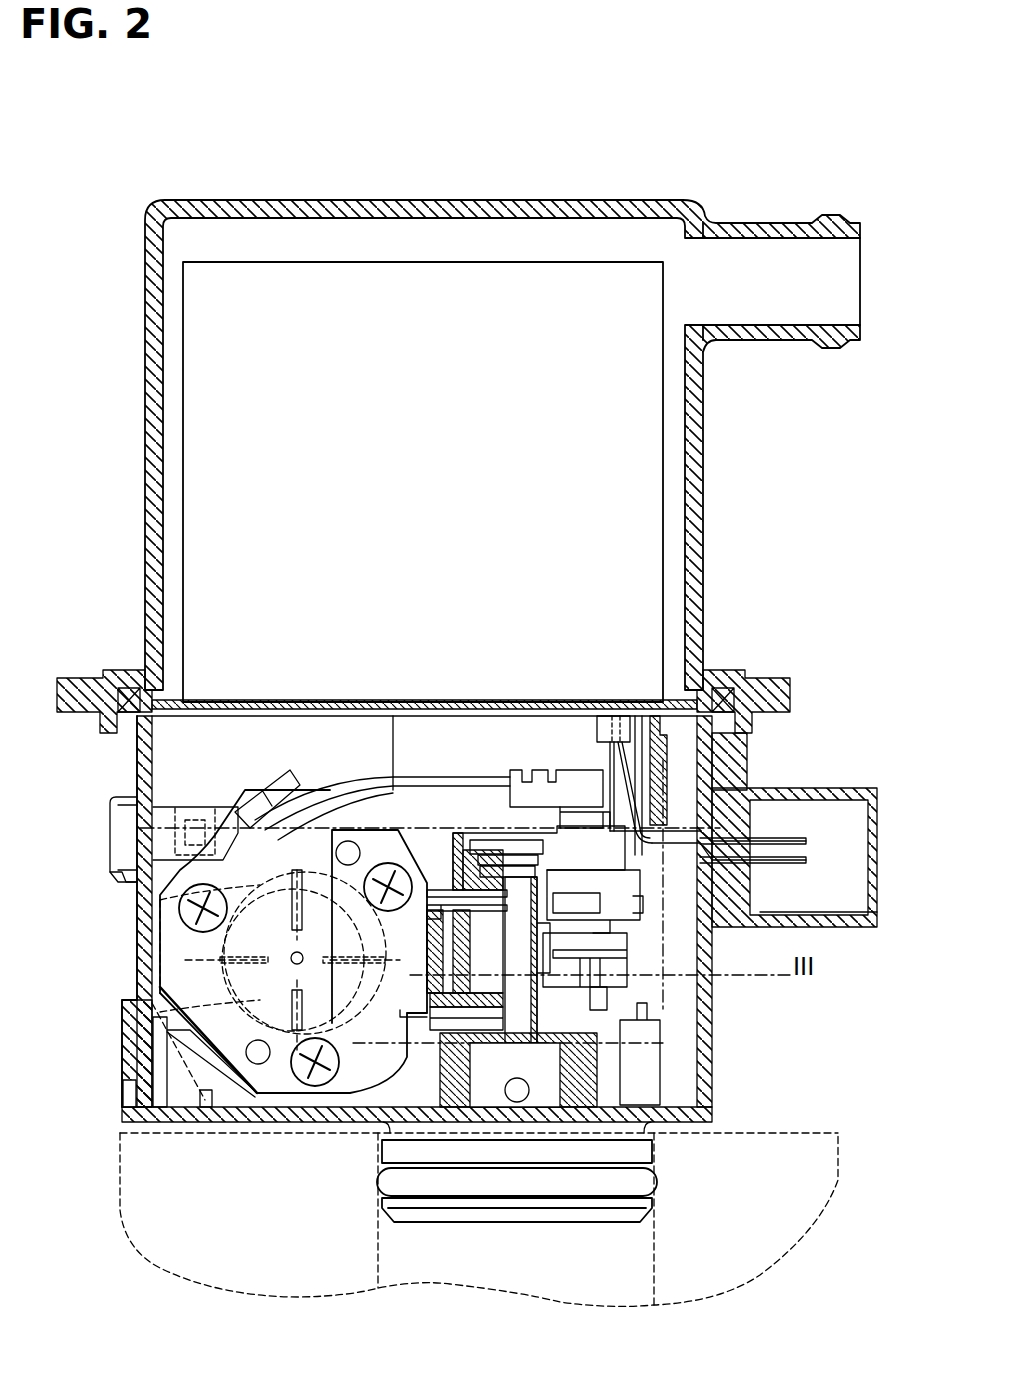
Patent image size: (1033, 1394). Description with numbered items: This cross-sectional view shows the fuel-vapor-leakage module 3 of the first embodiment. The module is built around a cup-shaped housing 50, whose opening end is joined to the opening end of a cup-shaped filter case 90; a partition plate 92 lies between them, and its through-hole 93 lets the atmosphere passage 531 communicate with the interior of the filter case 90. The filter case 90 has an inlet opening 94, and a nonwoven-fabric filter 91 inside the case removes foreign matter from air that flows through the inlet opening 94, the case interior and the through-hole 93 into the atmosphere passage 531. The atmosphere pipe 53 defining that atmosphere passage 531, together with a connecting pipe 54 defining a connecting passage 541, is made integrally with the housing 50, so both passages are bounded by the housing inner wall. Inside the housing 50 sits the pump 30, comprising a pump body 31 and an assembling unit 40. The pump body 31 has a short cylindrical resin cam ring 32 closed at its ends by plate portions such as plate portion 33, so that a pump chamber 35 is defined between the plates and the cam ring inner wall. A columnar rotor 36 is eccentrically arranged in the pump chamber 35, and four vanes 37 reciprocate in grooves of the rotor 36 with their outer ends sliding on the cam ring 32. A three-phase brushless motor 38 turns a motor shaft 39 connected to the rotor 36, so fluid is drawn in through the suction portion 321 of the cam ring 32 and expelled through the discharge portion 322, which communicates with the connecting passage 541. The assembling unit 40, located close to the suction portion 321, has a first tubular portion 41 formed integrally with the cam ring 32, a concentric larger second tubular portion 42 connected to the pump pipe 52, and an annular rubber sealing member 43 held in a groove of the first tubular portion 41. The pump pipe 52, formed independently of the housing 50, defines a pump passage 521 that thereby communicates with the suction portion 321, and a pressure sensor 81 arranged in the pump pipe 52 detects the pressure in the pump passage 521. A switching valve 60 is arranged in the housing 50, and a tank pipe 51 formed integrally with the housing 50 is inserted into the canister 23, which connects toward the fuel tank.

The fuel-vapor-leakage module 3 is at (728, 125).
The filter case 90 is at (430, 200).
The filter 91 is at (500, 270).
The inlet opening 94 is at (700, 300).
The through-hole 93 is at (228, 700).
The partition plate 92 is at (368, 700).
The atmosphere pipe 53 is at (135, 748).
The atmosphere passage 531 is at (165, 778).
The switching valve 60 is at (390, 735).
The motor 38 is at (207, 860).
The vane 37 is at (290, 830).
The assembling unit 40 is at (445, 868).
The pressure sensor 81 is at (520, 805).
The first tubular portion 41 is at (440, 893).
The sealing member 43 is at (478, 854).
The second tubular portion 42 is at (492, 866).
The connecting pipe 54 is at (135, 845).
The connecting passage 541 is at (135, 872).
The pump chamber 35 is at (160, 900).
The discharge portion 322 is at (158, 932).
The motor shaft 39 is at (290, 965).
The rotor 36 is at (160, 1012).
The suction portion 321 is at (372, 1088).
The pump pipe 52 is at (545, 1000).
The pump passage 521 is at (540, 1024).
The housing 50 is at (712, 1050).
The canister 23 is at (800, 1140).
The pump 30 is at (197, 1085).
The plate portion 33 is at (252, 1072).
The pump body 31 is at (287, 1085).
The cam ring 32 is at (360, 1090).
The tank pipe 51 is at (645, 1150).